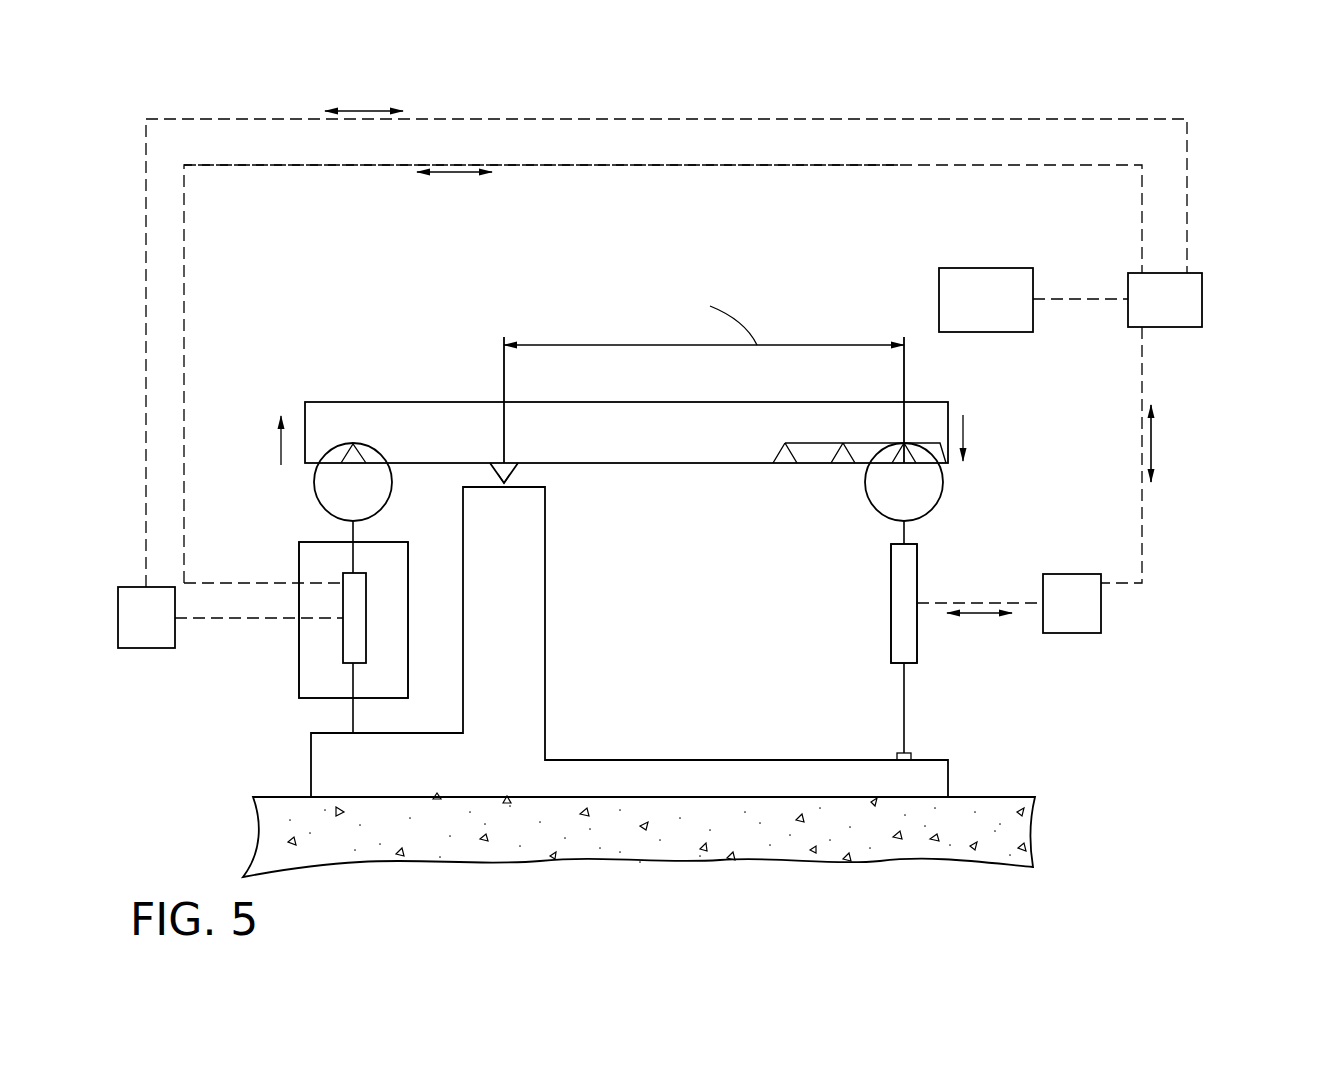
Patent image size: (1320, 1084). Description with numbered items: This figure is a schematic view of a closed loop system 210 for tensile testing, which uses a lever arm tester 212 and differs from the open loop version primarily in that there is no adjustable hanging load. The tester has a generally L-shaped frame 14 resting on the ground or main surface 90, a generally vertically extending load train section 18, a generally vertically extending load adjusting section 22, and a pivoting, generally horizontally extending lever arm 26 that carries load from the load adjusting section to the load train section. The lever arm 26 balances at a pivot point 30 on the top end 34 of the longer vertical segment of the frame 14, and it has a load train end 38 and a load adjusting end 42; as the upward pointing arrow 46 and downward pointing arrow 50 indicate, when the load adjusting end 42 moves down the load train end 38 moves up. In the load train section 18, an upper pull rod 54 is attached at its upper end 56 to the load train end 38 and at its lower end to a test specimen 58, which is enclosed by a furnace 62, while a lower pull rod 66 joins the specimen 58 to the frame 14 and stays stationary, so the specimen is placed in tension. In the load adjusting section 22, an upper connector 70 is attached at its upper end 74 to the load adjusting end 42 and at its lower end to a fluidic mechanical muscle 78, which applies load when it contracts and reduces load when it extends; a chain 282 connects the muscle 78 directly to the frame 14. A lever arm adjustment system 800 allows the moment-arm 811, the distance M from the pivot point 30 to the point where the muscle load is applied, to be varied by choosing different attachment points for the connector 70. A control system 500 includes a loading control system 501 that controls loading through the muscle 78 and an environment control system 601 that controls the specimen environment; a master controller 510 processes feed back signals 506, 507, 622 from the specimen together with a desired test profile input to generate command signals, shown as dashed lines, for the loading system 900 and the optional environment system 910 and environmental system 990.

The frame 14 is at (559, 640).
The load train section 18 is at (291, 562).
The load adjusting section 22 is at (930, 582).
The lever arm 26 is at (581, 402).
The pivot point 30 is at (517, 468).
The top end 34 is at (483, 480).
The load train end 38 is at (358, 389).
The load adjusting end 42 is at (922, 387).
The upward pointing arrow 46 is at (281, 455).
The downward pointing arrow 50 is at (966, 424).
The upper pull rod 54 is at (355, 530).
The upper pull rod upper end connection 56 is at (314, 493).
The test specimen 58 is at (353, 643).
The furnace 62 is at (293, 655).
The lower pull rod 66 is at (354, 720).
The upper connector 70 is at (905, 535).
The upper connector connection 74 is at (865, 496).
The fluidic mechanical muscle 78 is at (890, 590).
The ground or main surface 90 is at (748, 797).
The closed loop system 210 is at (637, 289).
The lever arm tester 212 is at (537, 326).
The chain 282 is at (904, 706).
The control system 500 is at (1089, 674).
The loading control system 501 is at (1009, 603).
The feed back signal 506 is at (990, 165).
The feed back signal 507 is at (890, 166).
The master controller 510 is at (1070, 300).
The environment control system 601 is at (230, 615).
The feed back signal 622 is at (1103, 120).
The lever arm adjustment system 800 is at (813, 429).
The moment-arm 811 is at (710, 296).
The loading system 900 is at (1204, 207).
The environment system 910 is at (800, 627).
The environmental system 990 is at (236, 739).